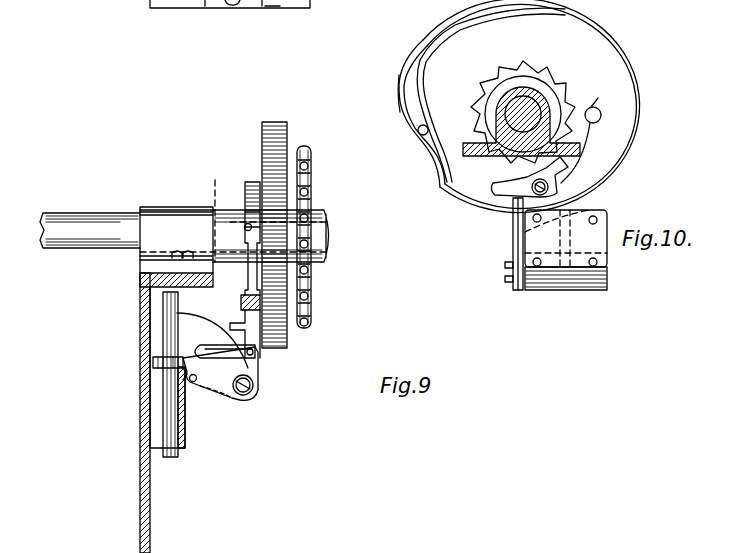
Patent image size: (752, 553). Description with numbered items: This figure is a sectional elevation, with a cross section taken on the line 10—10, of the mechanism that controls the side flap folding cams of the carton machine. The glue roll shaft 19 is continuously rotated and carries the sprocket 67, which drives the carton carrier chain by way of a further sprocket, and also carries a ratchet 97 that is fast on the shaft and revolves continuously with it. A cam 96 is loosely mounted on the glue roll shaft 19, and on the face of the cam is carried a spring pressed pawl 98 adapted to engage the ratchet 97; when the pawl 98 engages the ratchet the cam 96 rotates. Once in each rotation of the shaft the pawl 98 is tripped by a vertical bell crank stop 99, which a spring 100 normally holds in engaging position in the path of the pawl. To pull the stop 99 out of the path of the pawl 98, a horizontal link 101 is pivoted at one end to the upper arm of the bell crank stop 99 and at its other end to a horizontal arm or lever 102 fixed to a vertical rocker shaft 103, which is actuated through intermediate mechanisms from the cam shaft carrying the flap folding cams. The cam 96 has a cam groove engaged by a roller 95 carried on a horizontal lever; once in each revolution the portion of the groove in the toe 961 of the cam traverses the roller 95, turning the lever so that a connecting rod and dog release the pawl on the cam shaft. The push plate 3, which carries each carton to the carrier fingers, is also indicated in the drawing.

In FIG. 9, the push plate 3 is at (220, 9).
In FIG. 9, the section line 10— 10 is at (219, 205).
In FIG. 9, the glue roll shaft 19 is at (76, 216).
In FIG. 10, the glue roll shaft 19 is at (499, 124).
In FIG. 9, the sprocket 67 is at (312, 164).
In FIG. 10, the roller 95 is at (400, 113).
In FIG. 9, the cam 96 is at (264, 126).
In FIG. 10, the cam 96 is at (604, 56).
In FIG. 10, the toe of the cam 961 is at (430, 52).
In FIG. 9, the ratchet 97 is at (248, 184).
In FIG. 10, the ratchet 97 is at (513, 72).
In FIG. 9, the spring pressed pawl 98 is at (246, 325).
In FIG. 10, the spring pressed pawl 98 is at (566, 183).
In FIG. 9, the vertical bell crank stop 99 is at (253, 367).
In FIG. 10, the vertical bell crank stop 99 is at (514, 247).
In FIG. 9, the spring 100 is at (196, 382).
In FIG. 9, the horizontal link 101 is at (222, 352).
In FIG. 9, the horizontal arm or lever 102 is at (185, 378).
In FIG. 9, the vertical rocker shaft 103 is at (172, 339).